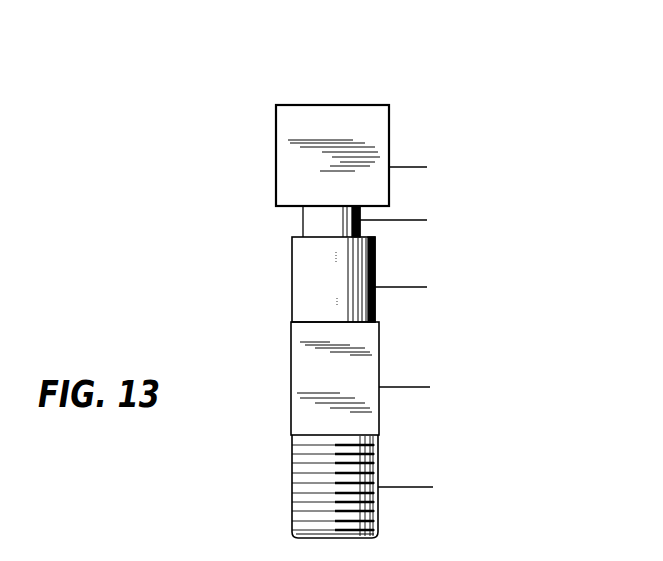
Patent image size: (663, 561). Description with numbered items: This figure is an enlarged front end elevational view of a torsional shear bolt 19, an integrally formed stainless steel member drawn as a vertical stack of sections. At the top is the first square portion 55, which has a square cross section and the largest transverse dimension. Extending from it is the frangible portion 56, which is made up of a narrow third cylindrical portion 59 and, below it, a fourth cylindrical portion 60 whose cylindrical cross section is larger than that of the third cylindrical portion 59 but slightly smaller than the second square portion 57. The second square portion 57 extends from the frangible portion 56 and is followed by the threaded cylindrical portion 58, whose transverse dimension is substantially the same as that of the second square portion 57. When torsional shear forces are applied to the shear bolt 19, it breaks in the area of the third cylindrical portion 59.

The torsional shear bolt 19 is at (396, 108).
The first square portion 55 is at (277, 166).
The third cylindrical portion 59 is at (302, 221).
The frangible portion 56 is at (277, 240).
The fourth cylindrical portion 60 is at (292, 286).
The second square portion 57 is at (290, 392).
The threaded cylindrical portion 58 is at (290, 484).